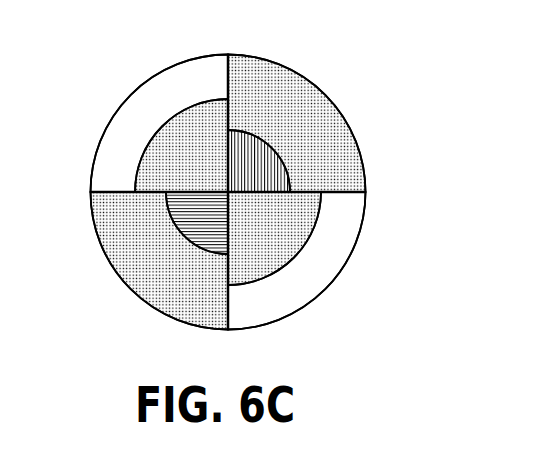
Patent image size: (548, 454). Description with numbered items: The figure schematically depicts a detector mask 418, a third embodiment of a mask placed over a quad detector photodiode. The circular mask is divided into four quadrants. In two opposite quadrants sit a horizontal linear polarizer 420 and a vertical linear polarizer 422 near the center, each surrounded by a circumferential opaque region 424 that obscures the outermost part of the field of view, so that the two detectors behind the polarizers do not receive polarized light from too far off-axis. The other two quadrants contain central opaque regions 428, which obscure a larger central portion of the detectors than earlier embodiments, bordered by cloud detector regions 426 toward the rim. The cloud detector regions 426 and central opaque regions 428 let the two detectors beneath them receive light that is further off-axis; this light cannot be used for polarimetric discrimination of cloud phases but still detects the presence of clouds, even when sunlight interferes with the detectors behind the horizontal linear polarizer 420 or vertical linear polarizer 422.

The detector mask 418 is at (372, 87).
The horizontal linear polarizer 420 is at (187, 218).
The vertical linear polarizer 422 is at (253, 167).
The circumferential opaque regions 424 is at (280, 97).
The cloud detector regions 426 is at (105, 165).
The central opaque regions 428 is at (200, 163).